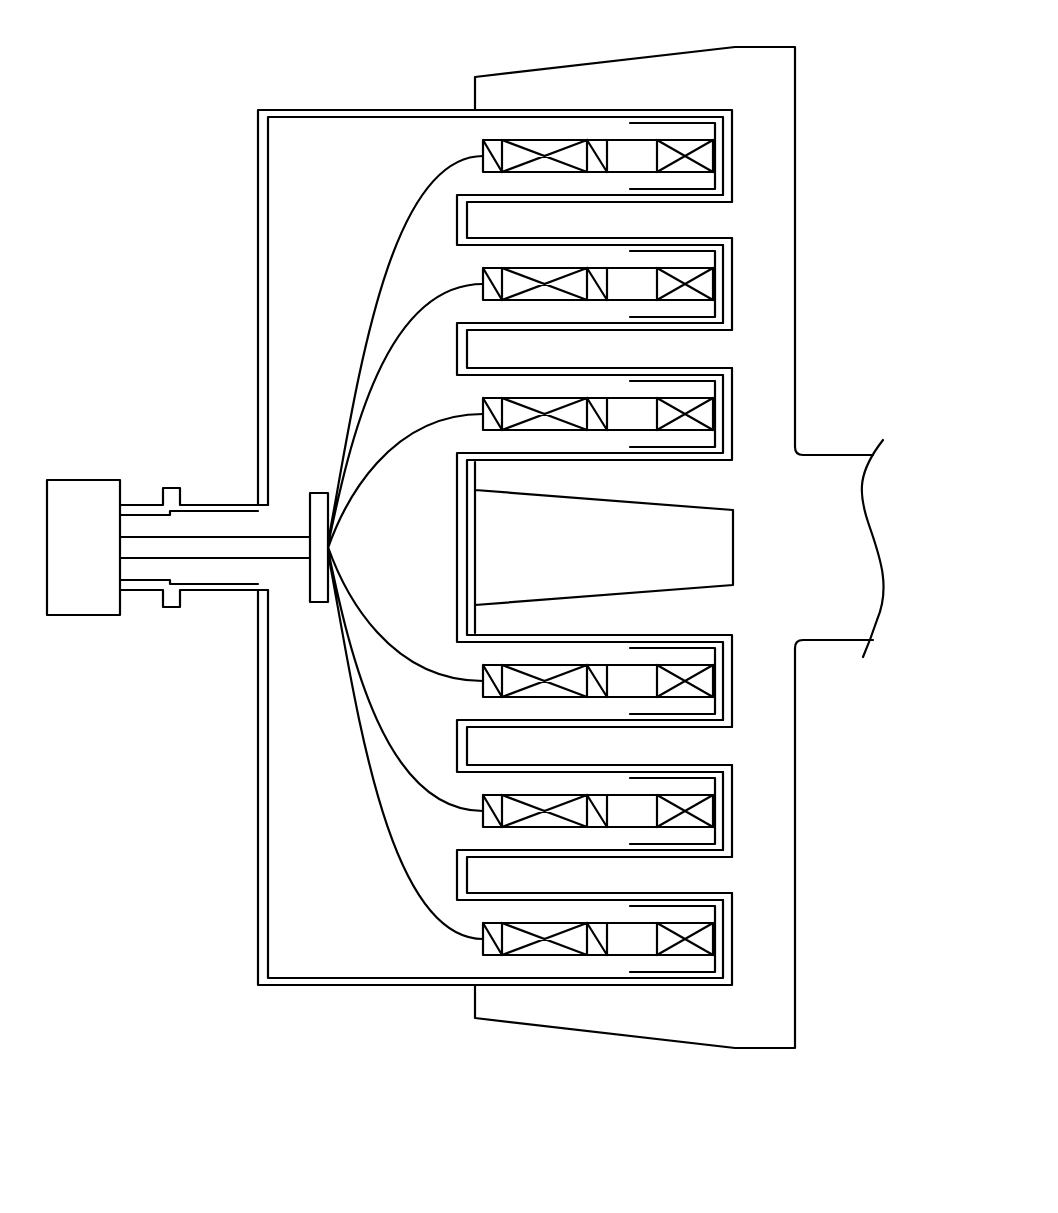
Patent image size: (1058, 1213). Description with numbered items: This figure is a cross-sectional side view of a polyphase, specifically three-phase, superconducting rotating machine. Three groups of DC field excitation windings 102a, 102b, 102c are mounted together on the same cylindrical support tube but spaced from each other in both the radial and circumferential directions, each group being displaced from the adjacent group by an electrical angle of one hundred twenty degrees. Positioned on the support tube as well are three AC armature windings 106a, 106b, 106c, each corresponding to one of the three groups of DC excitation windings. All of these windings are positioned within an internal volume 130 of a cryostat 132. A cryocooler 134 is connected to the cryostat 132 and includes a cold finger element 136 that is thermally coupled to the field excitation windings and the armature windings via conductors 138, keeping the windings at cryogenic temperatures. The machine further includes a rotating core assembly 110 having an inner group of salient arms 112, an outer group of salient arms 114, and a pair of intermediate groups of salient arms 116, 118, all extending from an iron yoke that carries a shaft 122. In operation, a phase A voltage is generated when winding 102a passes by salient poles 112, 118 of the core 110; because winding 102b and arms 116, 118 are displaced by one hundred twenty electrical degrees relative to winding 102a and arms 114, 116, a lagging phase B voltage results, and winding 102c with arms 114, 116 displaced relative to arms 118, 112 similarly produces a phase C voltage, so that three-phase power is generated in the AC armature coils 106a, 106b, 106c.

The DC field excitation winding 102a is at (522, 410).
The DC field excitation winding 102b is at (522, 280).
The DC field excitation winding 102c is at (522, 152).
The AC armature winding 106a is at (702, 415).
The AC armature winding 106b is at (702, 286).
The AC armature winding 106c is at (702, 155).
The rotating core assembly 110 is at (846, 451).
The inner group of salient arms 112 is at (547, 495).
The outer group of salient arms 114 is at (587, 66).
The intermediate group of salient arms 116 is at (725, 216).
The intermediate group of salient arms 118 is at (725, 344).
The shaft 122 is at (855, 502).
The internal volume 130 is at (285, 339).
The cryostat 132 is at (258, 229).
The cryocooler 134 is at (73, 617).
The cold finger element 136 is at (243, 559).
The conductors 138 is at (393, 237).